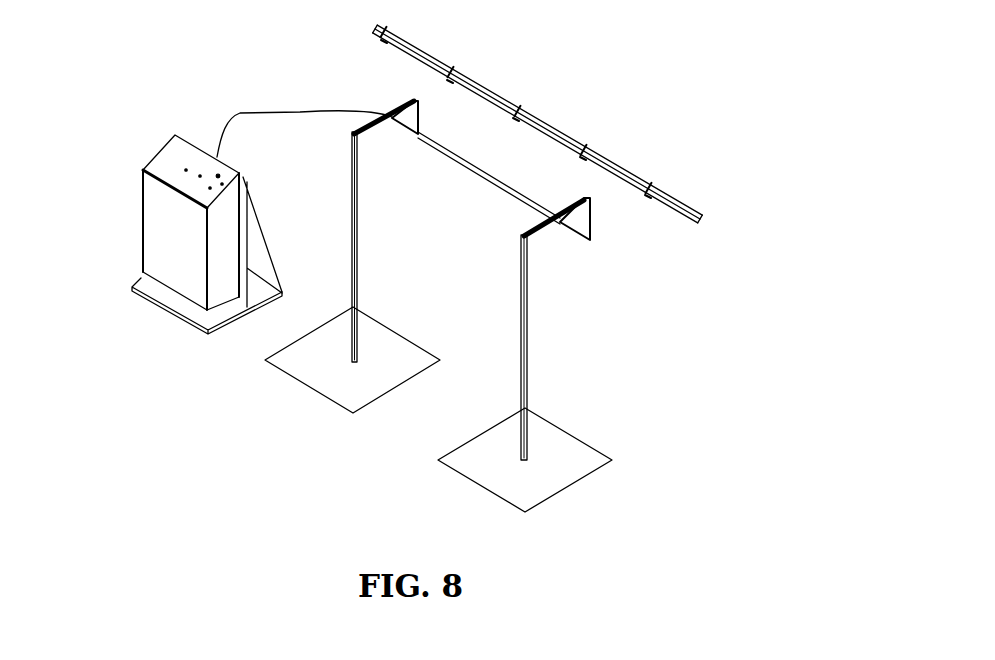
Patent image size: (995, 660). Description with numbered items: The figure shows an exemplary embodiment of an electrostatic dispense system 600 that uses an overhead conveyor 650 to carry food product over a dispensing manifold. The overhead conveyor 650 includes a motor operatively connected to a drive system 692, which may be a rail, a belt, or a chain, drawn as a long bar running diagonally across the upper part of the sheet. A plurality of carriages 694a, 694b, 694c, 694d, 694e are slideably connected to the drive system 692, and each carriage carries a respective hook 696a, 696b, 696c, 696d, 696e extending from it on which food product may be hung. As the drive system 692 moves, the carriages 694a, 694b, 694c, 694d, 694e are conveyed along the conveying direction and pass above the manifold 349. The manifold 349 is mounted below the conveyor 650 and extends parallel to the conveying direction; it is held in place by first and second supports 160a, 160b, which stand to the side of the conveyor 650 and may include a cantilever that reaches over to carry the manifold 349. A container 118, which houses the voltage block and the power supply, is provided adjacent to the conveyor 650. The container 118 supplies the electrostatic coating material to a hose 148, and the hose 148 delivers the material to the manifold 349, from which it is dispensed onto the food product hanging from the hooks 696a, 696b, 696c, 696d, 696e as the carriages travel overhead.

The container 118 is at (130, 186).
The hose 148 is at (305, 113).
The first support 160a is at (360, 205).
The second support 160b is at (530, 305).
The manifold 349 is at (490, 183).
The electrostatic dispense system 600 is at (280, 75).
The overhead conveyor 650 is at (722, 208).
The drive system 692 is at (497, 92).
The carriage 694a is at (398, 19).
The carriage 694b is at (463, 52).
The carriage 694c is at (533, 94).
The carriage 694d is at (595, 130).
The carriage 694e is at (660, 170).
The hook 696a is at (385, 46).
The hook 696b is at (450, 84).
The hook 696c is at (512, 118).
The hook 696d is at (583, 158).
The hook 696e is at (648, 198).